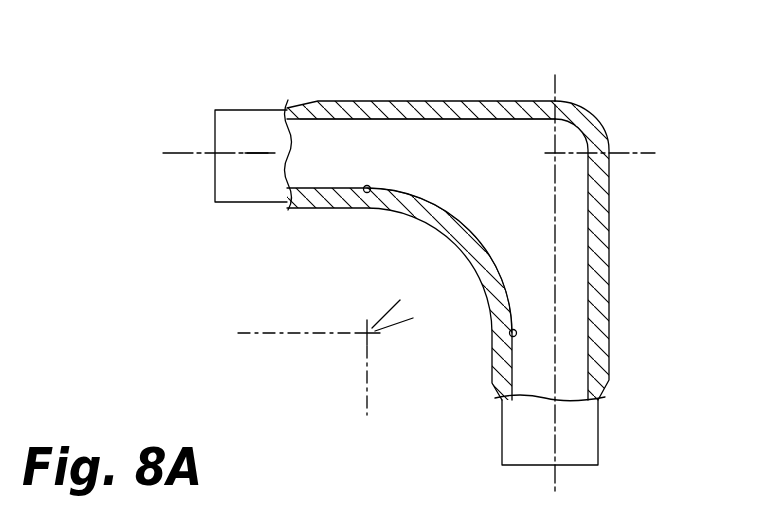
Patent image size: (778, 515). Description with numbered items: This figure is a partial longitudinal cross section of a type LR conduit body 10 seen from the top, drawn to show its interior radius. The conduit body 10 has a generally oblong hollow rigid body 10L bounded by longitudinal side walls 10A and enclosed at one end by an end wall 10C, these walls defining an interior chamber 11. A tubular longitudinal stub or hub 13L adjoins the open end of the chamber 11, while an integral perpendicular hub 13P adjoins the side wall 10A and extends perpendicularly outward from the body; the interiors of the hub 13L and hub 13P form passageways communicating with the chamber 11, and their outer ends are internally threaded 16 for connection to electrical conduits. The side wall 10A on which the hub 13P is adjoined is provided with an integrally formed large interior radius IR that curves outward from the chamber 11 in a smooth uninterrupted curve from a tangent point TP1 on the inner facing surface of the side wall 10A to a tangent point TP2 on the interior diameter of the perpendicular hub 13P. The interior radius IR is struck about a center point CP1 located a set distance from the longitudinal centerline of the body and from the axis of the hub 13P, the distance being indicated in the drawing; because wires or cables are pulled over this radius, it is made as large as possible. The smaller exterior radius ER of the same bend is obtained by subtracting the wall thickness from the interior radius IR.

The conduit body 10 is at (680, 87).
The longitudinal side wall 10A is at (338, 114).
The hollow rigid body 10L is at (487, 100).
The end wall 10C is at (612, 178).
The interior chamber 11 is at (450, 168).
The longitudinal hub 13L is at (215, 130).
The perpendicular hub 13P is at (585, 437).
The internal threads 16 is at (232, 185).
The first tangent point TP1 is at (370, 186).
The second tangent point TP2 is at (517, 335).
The interior radius IR is at (466, 232).
The exterior radius ER is at (490, 300).
The center point CP1 is at (260, 160).